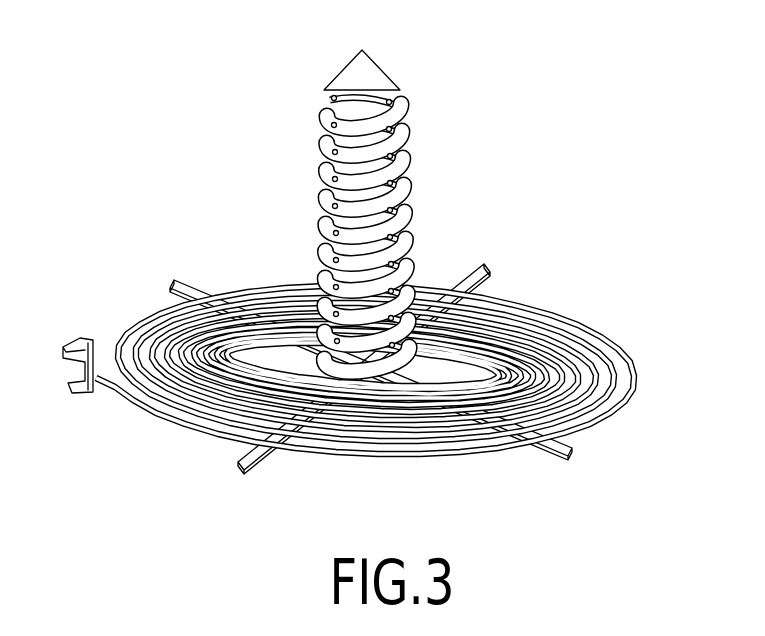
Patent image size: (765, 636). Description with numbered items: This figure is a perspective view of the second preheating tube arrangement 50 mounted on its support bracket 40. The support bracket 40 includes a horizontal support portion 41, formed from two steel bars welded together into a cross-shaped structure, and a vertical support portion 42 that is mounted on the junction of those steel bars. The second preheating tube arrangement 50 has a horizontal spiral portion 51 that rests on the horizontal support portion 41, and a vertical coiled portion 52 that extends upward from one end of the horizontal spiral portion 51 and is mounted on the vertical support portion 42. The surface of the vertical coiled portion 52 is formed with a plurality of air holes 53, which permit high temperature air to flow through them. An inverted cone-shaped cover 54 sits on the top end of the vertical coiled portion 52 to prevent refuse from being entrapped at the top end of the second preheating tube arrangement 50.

The support bracket 40 is at (268, 466).
The horizontal support portion 41 is at (573, 450).
The vertical support portion 42 is at (422, 235).
The second preheating tube arrangement 50 is at (556, 303).
The horizontal spiral portion 51 is at (122, 320).
The vertical coiled portion 52 is at (407, 176).
The air holes 53 is at (397, 138).
The inverted cone-shaped cover 54 is at (367, 70).